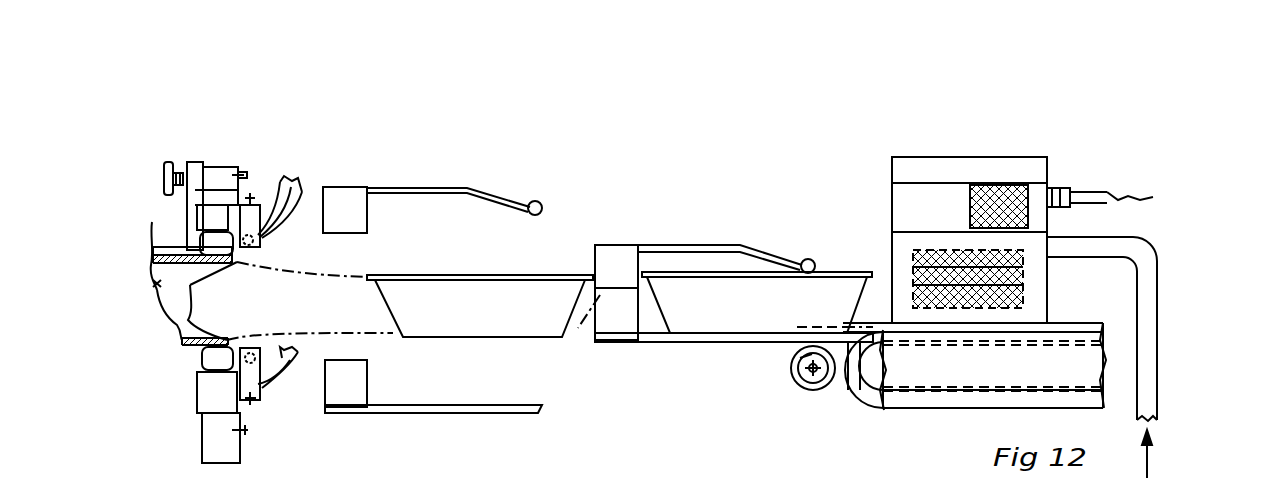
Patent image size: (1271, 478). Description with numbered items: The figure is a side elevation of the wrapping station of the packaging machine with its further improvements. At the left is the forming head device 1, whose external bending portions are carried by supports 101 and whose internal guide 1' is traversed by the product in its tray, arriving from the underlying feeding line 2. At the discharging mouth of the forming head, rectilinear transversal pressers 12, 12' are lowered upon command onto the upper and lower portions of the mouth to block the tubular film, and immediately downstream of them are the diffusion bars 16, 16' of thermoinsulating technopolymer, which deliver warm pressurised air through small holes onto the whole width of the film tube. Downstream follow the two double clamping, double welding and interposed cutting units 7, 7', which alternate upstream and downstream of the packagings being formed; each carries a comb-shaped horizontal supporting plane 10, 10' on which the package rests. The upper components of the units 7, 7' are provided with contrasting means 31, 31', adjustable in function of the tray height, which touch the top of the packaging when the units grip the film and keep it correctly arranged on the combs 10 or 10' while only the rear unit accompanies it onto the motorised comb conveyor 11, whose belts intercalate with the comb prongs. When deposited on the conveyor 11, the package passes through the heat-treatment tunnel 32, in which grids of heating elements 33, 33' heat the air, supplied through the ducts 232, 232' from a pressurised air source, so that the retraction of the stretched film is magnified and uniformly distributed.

The forming head device 1 is at (164, 255).
The guide 1' is at (161, 310).
The supports 101 is at (215, 177).
The transversal presser 12 is at (179, 215).
The transversal presser 12' is at (183, 383).
The diffusion bar 16 is at (264, 184).
The diffusion bar 16' is at (271, 404).
The clamping, welding and cutting unit 7 is at (331, 297).
The second clamping, welding and cutting unit 7' is at (616, 268).
The contrasting means 31 is at (454, 170).
The contrasting means 31' is at (726, 224).
The horizontal supporting plane 10 is at (433, 435).
The horizontal supporting plane 10' is at (734, 361).
The feeding line 2 is at (848, 264).
The motorised comb conveyor 11 is at (965, 404).
The heat-treatment tunnel 32 is at (988, 149).
The heating element 33 is at (944, 148).
The heating element 33' is at (958, 199).
The duct 232 is at (1133, 329).
The duct 232' is at (1136, 338).